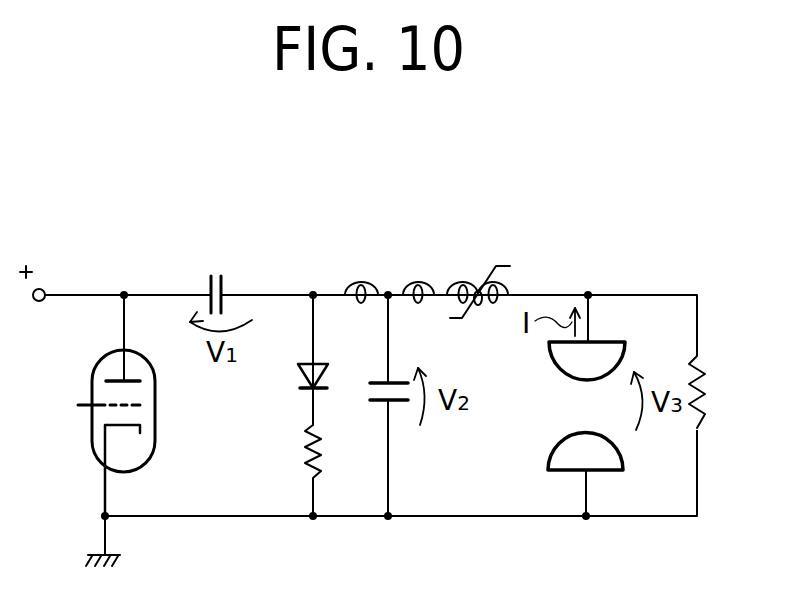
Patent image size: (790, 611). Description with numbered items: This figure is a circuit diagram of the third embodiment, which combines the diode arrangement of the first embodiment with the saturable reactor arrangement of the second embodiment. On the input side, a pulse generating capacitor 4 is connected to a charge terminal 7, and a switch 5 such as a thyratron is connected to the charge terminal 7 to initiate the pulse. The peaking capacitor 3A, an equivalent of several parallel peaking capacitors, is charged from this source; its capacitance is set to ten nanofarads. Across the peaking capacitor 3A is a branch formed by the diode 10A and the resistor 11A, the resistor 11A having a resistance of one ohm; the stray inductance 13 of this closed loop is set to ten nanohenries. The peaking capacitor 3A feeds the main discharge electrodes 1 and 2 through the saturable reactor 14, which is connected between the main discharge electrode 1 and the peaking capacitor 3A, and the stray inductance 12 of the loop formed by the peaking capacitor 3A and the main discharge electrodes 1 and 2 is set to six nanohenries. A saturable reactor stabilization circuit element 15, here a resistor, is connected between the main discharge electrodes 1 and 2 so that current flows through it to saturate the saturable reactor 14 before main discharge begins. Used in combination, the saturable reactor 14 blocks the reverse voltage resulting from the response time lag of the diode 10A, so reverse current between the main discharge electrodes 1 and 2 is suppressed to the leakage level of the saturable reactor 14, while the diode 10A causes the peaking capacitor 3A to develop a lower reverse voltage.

The charge terminal 7 is at (39, 302).
The switch 5 is at (92, 445).
The pulse generating capacitor 4 is at (217, 272).
The diode 10A is at (303, 384).
The resistor 11A is at (306, 455).
The peaking capacitor 3A is at (406, 402).
The stray inductance 13 is at (360, 280).
The stray inductance 12 is at (421, 280).
The saturable reactor 14 is at (510, 283).
The main discharge electrode 1 is at (612, 352).
The main discharge electrode 2 is at (612, 462).
The saturable reactor stabilization circuit element 15 is at (704, 378).